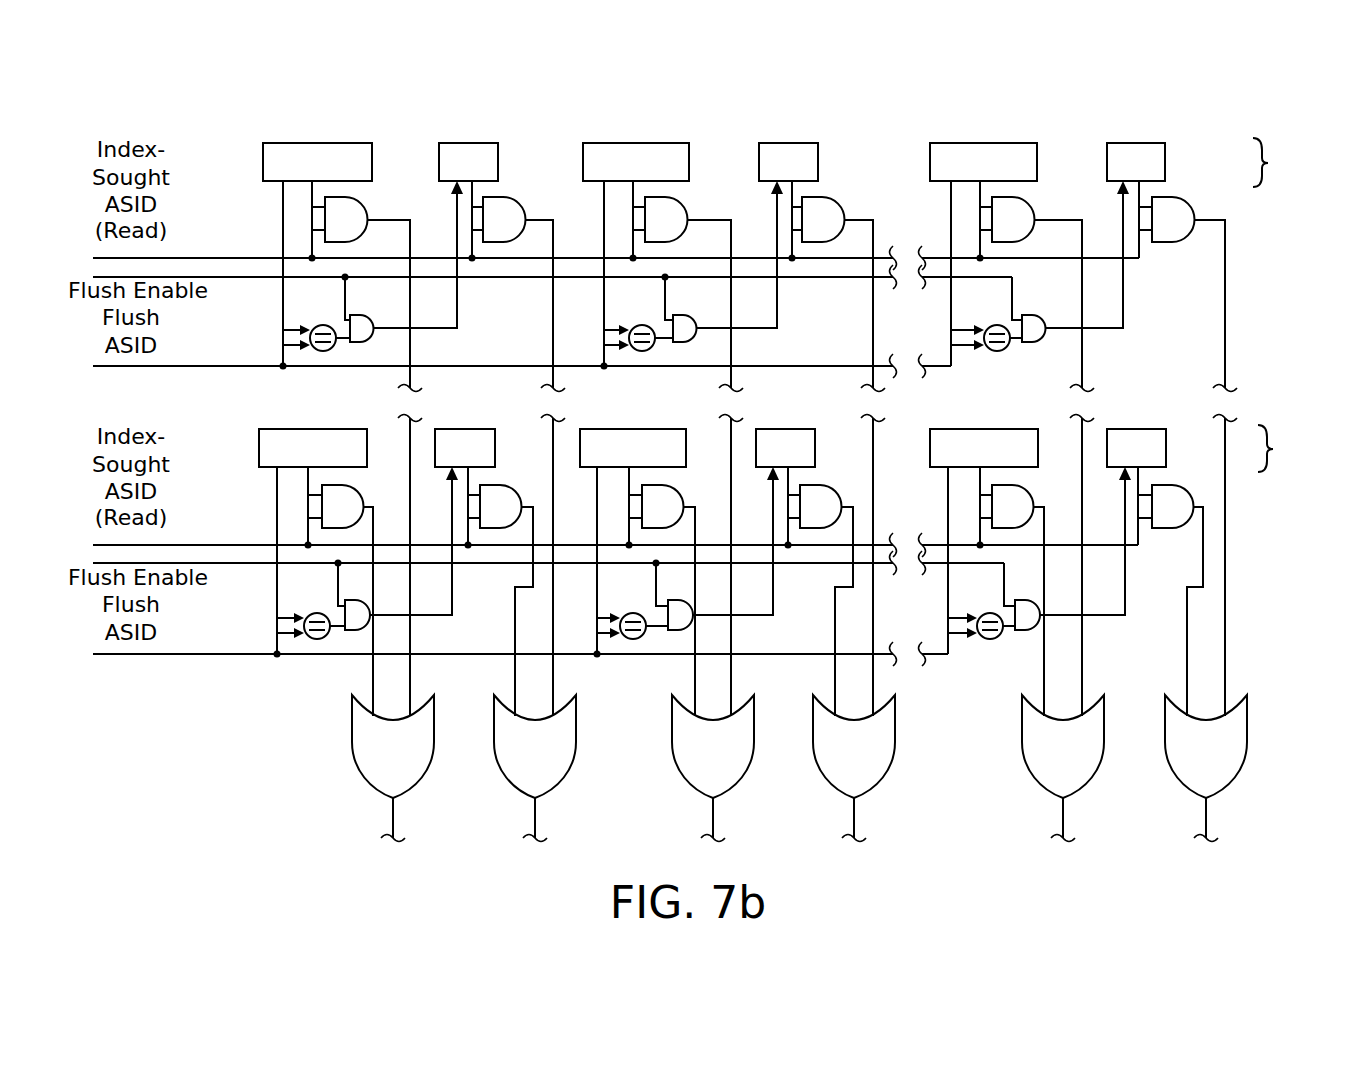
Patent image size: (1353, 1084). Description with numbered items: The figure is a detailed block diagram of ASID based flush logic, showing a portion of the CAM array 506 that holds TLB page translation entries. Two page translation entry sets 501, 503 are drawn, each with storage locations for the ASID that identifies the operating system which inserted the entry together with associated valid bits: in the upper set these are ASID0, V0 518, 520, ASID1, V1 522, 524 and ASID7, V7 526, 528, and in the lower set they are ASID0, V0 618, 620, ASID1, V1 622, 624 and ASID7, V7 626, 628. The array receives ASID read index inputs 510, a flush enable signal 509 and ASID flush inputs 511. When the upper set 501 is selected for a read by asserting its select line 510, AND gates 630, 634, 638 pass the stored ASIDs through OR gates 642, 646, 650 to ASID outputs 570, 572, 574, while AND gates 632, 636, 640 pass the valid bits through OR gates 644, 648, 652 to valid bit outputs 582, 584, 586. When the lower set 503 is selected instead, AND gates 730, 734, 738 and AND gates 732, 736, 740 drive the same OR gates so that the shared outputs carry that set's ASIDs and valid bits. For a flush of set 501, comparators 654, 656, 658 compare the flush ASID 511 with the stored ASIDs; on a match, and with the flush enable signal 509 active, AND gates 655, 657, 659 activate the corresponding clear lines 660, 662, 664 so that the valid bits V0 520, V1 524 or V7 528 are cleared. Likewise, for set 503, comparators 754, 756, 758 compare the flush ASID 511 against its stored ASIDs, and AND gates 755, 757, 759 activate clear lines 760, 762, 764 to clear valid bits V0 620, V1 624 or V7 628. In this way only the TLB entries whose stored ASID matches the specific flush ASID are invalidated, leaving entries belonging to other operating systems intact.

The set 501 is at (1270, 163).
The set 503 is at (1275, 449).
The CAM array 506 is at (260, 708).
The flush enable signal 509 is at (219, 278).
The ASID read index inputs 510 is at (215, 258).
The ASID flush inputs 511 is at (210, 366).
The ASID0 518 is at (310, 143).
The V0 520 is at (464, 143).
The ASID1 522 is at (640, 143).
The V1 524 is at (795, 143).
The ASID7 526 is at (980, 143).
The V7 528 is at (1140, 143).
The ASID output 570 is at (393, 815).
The ASID output 572 is at (713, 815).
The ASID output 574 is at (1063, 815).
The valid bit output 582 is at (535, 815).
The valid bit output 584 is at (854, 815).
The valid bit output 586 is at (1206, 815).
The ASID0 618 is at (305, 429).
The V0 620 is at (462, 429).
The ASID1 622 is at (625, 429).
The V1 624 is at (778, 429).
The ASID7 626 is at (965, 429).
The V7 628 is at (1135, 429).
The AND gate 630 is at (362, 200).
The AND gate 632 is at (520, 200).
The AND gate 634 is at (684, 200).
The AND gate 636 is at (840, 200).
The AND gate 638 is at (1030, 200).
The AND gate 640 is at (1168, 243).
The OR gate 642 is at (352, 733).
The OR gate 644 is at (576, 740).
The OR gate 646 is at (672, 745).
The OR gate 648 is at (895, 740).
The OR gate 650 is at (1022, 745).
The OR gate 652 is at (1247, 745).
The comparator 654 is at (323, 325).
The AND gate 655 is at (366, 315).
The comparator 656 is at (642, 325).
The AND gate 657 is at (688, 315).
The comparator 658 is at (997, 325).
The AND gate 659 is at (1036, 315).
The clear line 660 is at (457, 300).
The clear line 662 is at (777, 302).
The clear line 664 is at (1125, 305).
The AND gate 730 is at (355, 488).
The AND gate 732 is at (511, 488).
The AND gate 734 is at (675, 488).
The AND gate 736 is at (831, 488).
The AND gate 738 is at (1025, 488).
The AND gate 740 is at (1181, 488).
The comparator 754 is at (317, 613).
The AND gate 755 is at (360, 631).
The comparator 756 is at (633, 613).
The AND gate 757 is at (683, 631).
The comparator 758 is at (990, 613).
The AND gate 759 is at (1030, 631).
The clear line 760 is at (453, 590).
The clear line 762 is at (774, 590).
The clear line 764 is at (1126, 592).